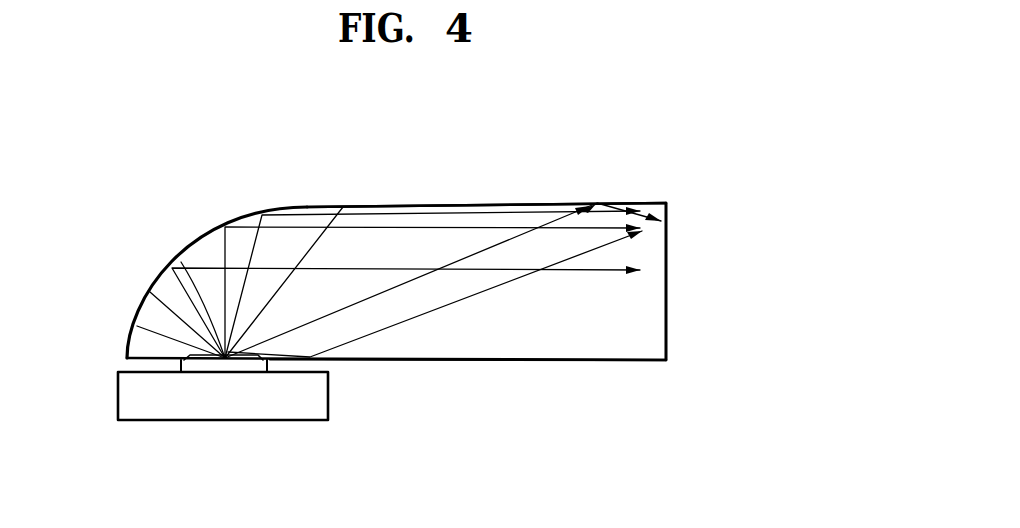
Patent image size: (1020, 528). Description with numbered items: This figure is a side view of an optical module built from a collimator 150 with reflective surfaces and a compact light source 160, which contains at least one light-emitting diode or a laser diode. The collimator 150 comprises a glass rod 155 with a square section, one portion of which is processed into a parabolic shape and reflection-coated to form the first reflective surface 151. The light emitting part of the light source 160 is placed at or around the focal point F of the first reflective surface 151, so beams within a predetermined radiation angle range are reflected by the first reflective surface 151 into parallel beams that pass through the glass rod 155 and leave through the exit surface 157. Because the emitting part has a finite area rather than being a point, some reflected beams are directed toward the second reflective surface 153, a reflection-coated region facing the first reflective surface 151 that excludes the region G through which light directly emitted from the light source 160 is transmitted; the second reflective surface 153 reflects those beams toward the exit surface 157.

The collimator 150 is at (523, 203).
The first reflective surface 151 is at (243, 218).
The second reflective surface 153 is at (333, 362).
The glass rod 155 is at (453, 205).
The exit surface 157 is at (666, 280).
The light source 160 is at (202, 418).
The focal point F is at (225, 358).
The region G is at (181, 262).